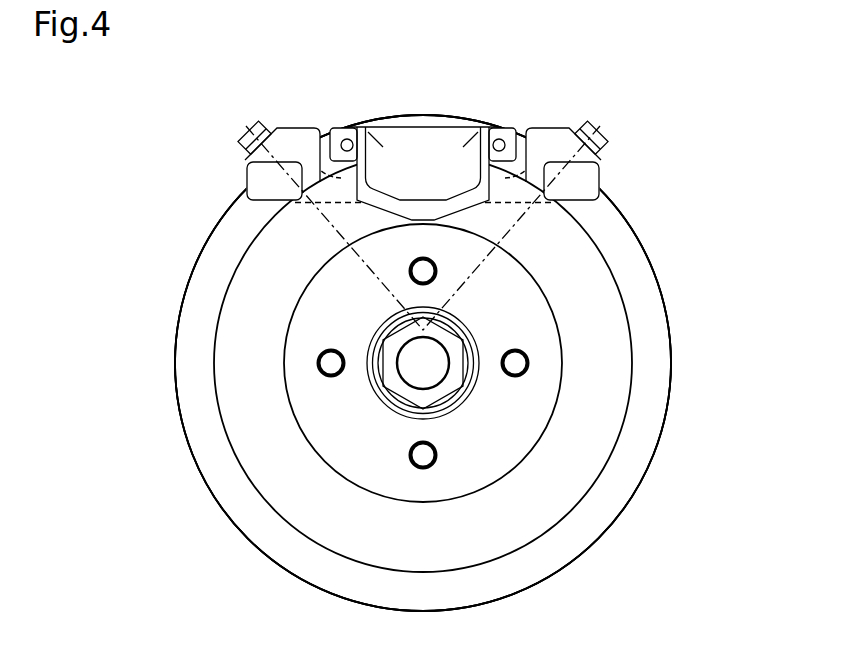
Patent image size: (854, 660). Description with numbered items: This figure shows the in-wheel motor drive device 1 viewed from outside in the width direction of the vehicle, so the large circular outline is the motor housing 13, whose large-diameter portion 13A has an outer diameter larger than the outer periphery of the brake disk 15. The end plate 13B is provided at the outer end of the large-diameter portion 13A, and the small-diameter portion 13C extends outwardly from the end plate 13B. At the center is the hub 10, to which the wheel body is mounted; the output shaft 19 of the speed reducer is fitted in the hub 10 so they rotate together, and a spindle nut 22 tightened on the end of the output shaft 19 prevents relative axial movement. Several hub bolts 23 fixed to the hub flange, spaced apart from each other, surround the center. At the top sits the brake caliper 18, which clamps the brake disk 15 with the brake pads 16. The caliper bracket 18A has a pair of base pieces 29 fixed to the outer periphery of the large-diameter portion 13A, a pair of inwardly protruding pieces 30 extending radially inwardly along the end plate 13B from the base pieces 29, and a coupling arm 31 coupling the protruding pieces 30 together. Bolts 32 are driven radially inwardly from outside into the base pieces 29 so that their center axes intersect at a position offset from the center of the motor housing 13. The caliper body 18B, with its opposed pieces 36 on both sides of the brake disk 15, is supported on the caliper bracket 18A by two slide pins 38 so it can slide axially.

The in-wheel motor drive device 1 is at (663, 282).
The hub 10 is at (371, 385).
The motor housing 13 is at (621, 524).
The large-diameter portion 13A is at (671, 355).
The end plate 13B is at (650, 400).
The small-diameter portion 13C is at (602, 442).
The brake disk 15 is at (248, 477).
The brake pads 16 is at (420, 144).
The brake caliper 18 is at (420, 138).
The caliper bracket 18A is at (598, 160).
The caliper body 18B is at (395, 126).
The output shaft 19 is at (413, 375).
The spindle nut 22 is at (450, 383).
The hub bolts 23 is at (320, 361).
The base pieces 29 is at (290, 128).
The inwardly protruding pieces 30 is at (263, 177).
The coupling arm 31 is at (333, 197).
The bolts 32 is at (248, 130).
The opposed pieces 36 is at (457, 165).
The slide pins 38 is at (342, 140).